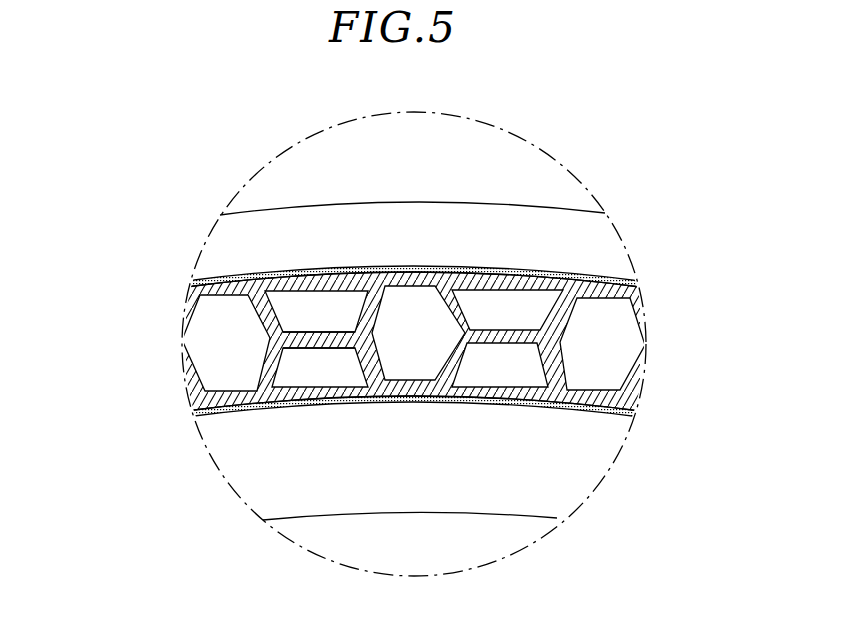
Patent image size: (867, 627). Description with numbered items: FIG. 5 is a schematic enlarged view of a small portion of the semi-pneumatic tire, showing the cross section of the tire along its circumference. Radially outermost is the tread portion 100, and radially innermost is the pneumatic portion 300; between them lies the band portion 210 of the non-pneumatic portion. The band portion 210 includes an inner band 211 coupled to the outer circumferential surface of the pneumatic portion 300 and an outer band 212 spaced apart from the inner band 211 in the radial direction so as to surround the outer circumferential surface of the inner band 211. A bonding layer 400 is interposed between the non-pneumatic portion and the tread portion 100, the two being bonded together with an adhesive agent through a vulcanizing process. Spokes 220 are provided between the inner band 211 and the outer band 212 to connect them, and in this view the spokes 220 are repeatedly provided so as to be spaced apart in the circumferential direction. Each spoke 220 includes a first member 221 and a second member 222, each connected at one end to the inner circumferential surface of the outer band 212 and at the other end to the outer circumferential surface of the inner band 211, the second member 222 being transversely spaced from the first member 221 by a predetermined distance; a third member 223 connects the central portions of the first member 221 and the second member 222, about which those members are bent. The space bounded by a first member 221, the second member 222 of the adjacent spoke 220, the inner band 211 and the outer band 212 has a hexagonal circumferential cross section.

The tread portion 100 is at (460, 222).
The band portion 210 is at (411, 343).
The inner band 211 is at (633, 412).
The outer band 212 is at (633, 283).
The spokes 220 is at (338, 347).
The first member 221 is at (257, 311).
The second member 222 is at (360, 312).
The third member 223 is at (305, 335).
The pneumatic portion 300 is at (607, 432).
The bonding layer 400 is at (207, 277).